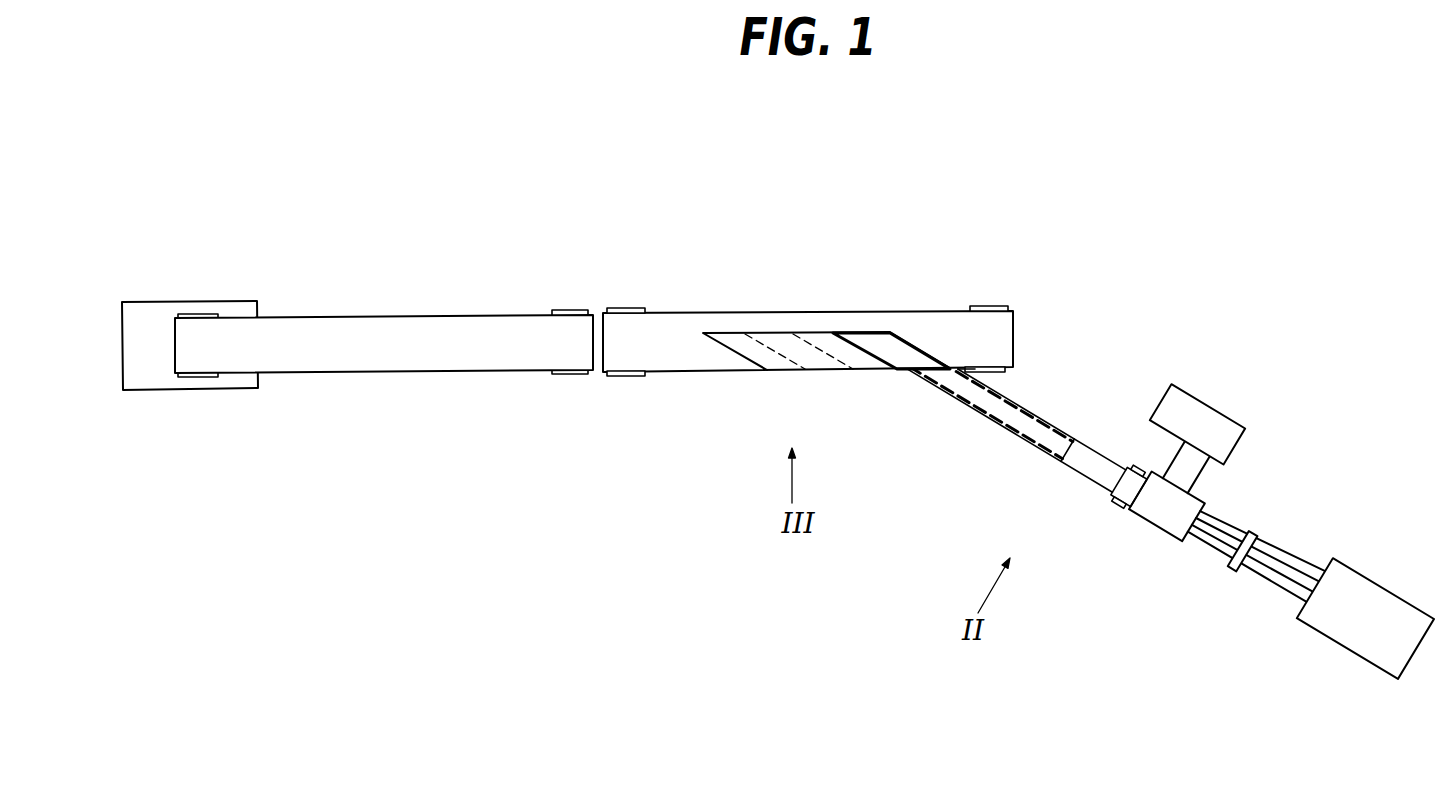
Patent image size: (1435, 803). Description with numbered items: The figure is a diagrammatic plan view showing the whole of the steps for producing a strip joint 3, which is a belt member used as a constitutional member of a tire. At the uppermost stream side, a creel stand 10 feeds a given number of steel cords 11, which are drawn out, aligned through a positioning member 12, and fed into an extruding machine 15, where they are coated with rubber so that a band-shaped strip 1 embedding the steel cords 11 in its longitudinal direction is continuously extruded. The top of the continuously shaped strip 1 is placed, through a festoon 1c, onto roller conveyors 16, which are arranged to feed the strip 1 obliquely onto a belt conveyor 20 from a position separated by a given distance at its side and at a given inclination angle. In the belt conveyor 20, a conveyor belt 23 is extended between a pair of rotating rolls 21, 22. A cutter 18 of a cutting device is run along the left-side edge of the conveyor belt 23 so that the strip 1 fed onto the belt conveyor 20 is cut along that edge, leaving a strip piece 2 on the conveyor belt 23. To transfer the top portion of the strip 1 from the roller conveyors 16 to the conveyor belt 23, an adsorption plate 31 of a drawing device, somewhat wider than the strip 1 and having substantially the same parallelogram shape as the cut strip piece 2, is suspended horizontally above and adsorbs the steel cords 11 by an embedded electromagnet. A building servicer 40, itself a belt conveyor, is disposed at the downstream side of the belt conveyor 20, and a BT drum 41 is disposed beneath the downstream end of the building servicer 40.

The strip 1 is at (1035, 428).
The festoon 1c is at (1083, 477).
The strip piece 2 is at (867, 332).
The strip joint 3 is at (798, 353).
The creel stand 10 is at (1353, 652).
The steel cords 11 is at (1280, 556).
The positioning member 12 is at (1232, 567).
The extruding machine 15 is at (1197, 418).
The roller conveyors 16 is at (1037, 450).
The cutter 18 is at (975, 369).
The belt conveyor 20 is at (768, 298).
The rotating roll 21 is at (987, 307).
The rotating roll 22 is at (623, 308).
The conveyor belt 23 is at (723, 313).
The adsorption plate 31 is at (920, 347).
The building servicer 40 is at (408, 310).
The BT drum 41 is at (177, 298).